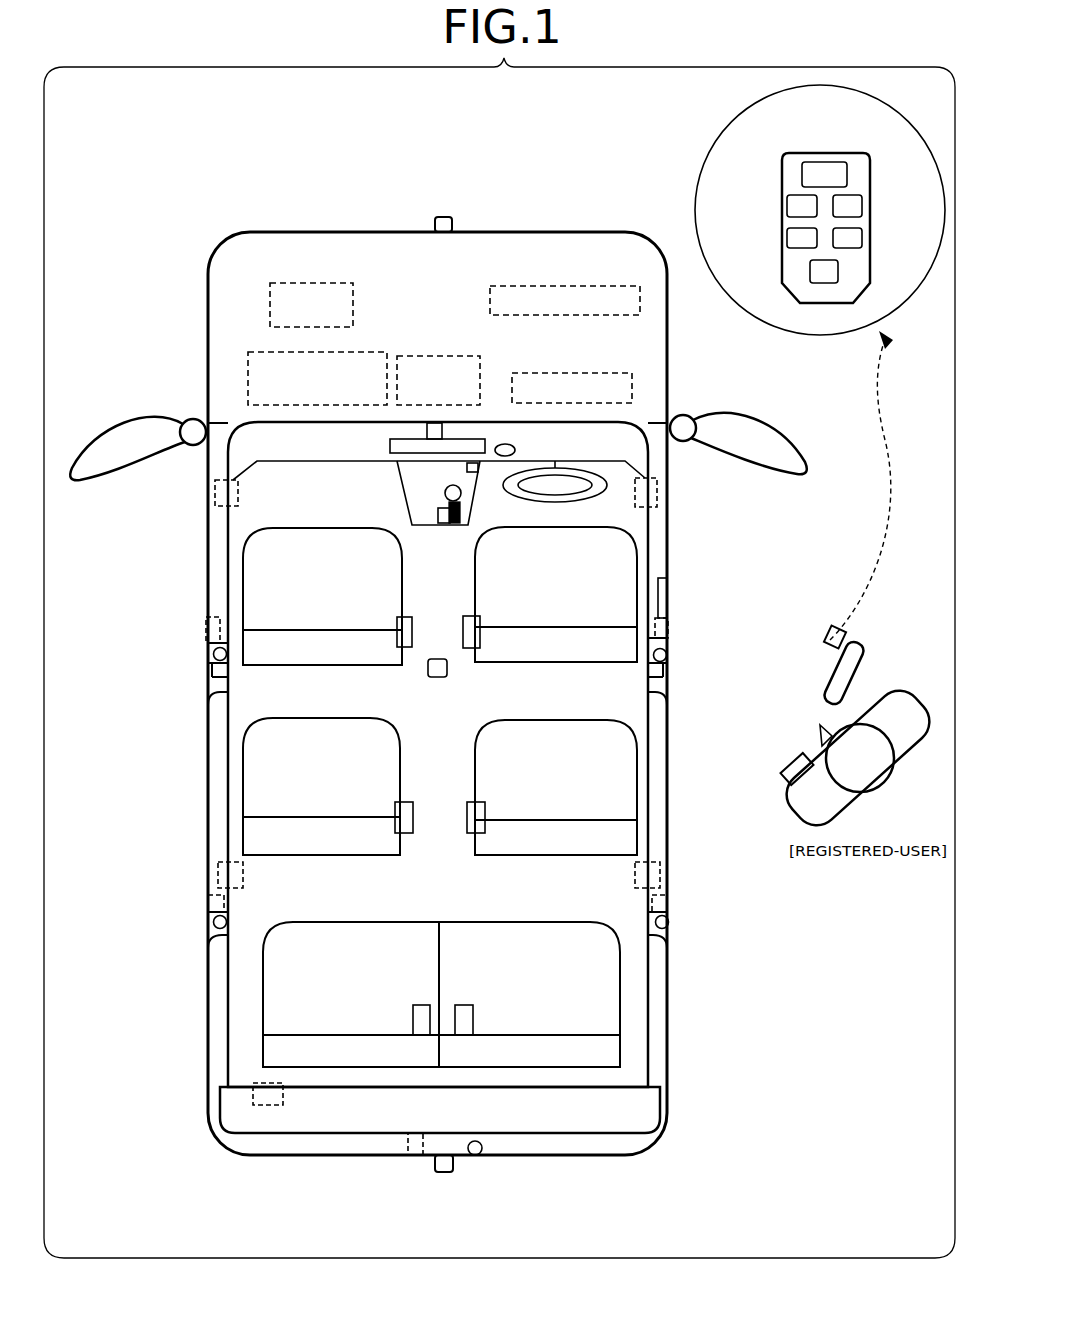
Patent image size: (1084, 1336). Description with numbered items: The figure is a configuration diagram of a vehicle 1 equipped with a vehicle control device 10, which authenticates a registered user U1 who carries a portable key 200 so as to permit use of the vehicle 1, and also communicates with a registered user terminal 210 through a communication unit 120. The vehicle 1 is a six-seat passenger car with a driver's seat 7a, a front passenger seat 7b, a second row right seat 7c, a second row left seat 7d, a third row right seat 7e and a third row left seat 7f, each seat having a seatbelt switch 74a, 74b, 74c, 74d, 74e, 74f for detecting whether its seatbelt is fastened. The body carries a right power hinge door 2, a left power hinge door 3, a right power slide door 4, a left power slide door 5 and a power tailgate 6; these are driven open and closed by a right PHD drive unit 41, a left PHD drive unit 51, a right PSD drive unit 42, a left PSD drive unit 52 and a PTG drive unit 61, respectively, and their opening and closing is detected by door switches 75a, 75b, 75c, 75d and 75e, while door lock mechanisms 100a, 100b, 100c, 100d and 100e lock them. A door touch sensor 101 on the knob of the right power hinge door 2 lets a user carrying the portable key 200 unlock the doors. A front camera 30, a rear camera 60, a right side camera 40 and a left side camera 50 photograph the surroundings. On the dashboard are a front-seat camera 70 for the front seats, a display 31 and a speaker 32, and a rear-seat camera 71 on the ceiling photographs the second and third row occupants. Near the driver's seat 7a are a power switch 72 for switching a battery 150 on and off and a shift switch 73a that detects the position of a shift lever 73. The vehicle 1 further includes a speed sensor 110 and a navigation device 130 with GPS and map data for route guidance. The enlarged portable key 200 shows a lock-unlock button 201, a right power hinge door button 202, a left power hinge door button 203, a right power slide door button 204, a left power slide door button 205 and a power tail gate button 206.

The vehicle 1 is at (545, 232).
The right power hinge door 2 is at (667, 562).
The left power hinge door 3 is at (210, 566).
The right power slide door 4 is at (668, 808).
The left power slide door 5 is at (210, 795).
The power tailgate 6 is at (613, 1133).
The vehicle control device 10 is at (250, 385).
The front camera 30 is at (443, 215).
The display 31 is at (390, 445).
The speaker 32 is at (515, 450).
The right side camera 40 is at (668, 680).
The right PHD drive unit 41 is at (660, 493).
The right PSD drive unit 42 is at (660, 880).
The left side camera 50 is at (215, 675).
The left PHD drive unit 51 is at (215, 493).
The left PSD drive unit 52 is at (218, 880).
The rear camera 60 is at (445, 1172).
The PTG drive unit 61 is at (270, 1107).
The front-seat camera 70 is at (442, 430).
The rear-seat camera 71 is at (438, 680).
The power switch 72 is at (478, 472).
The shift lever 73 is at (445, 492).
The shift switch 73a is at (438, 515).
The driver's seat 7a is at (475, 598).
The front passenger seat 7b is at (402, 572).
The second row right seat 7c is at (475, 778).
The second row left seat 7d is at (402, 747).
The third row right seat 7e is at (520, 920).
The third row left seat 7f is at (375, 920).
The seatbelt switch 74a is at (472, 650).
The seatbelt switch 74b is at (405, 650).
The seatbelt switch 74c is at (470, 835).
The seatbelt switch 74d is at (400, 835).
The seatbelt switch 74e is at (475, 1022).
The seatbelt switch 74f is at (423, 1003).
The door switch 75a is at (667, 655).
The door switch 75b is at (214, 655).
The door switch 75c is at (667, 930).
The door switch 75d is at (216, 930).
The door switch 75e is at (478, 1160).
The door lock mechanism 100a is at (665, 632).
The door lock mechanism 100b is at (208, 632).
The door lock mechanism 100c is at (667, 905).
The door lock mechanism 100d is at (210, 905).
The door lock mechanism 100e is at (415, 1160).
The door touch sensor 101 is at (668, 595).
The speed sensor 110 is at (565, 373).
The communication unit 120 is at (563, 286).
The navigation device 130 is at (430, 356).
The battery 150 is at (345, 283).
The portable key 200 is at (820, 153).
The lock-unlock button 201 is at (802, 172).
The right power hinge door button 202 is at (862, 210).
The left power hinge door button 203 is at (787, 205).
The right power slide door button 204 is at (862, 240).
The left power slide door button 205 is at (787, 238).
The power tail gate button 206 is at (810, 273).
The registered user terminal 210 is at (790, 765).
The registered user U1 is at (880, 740).